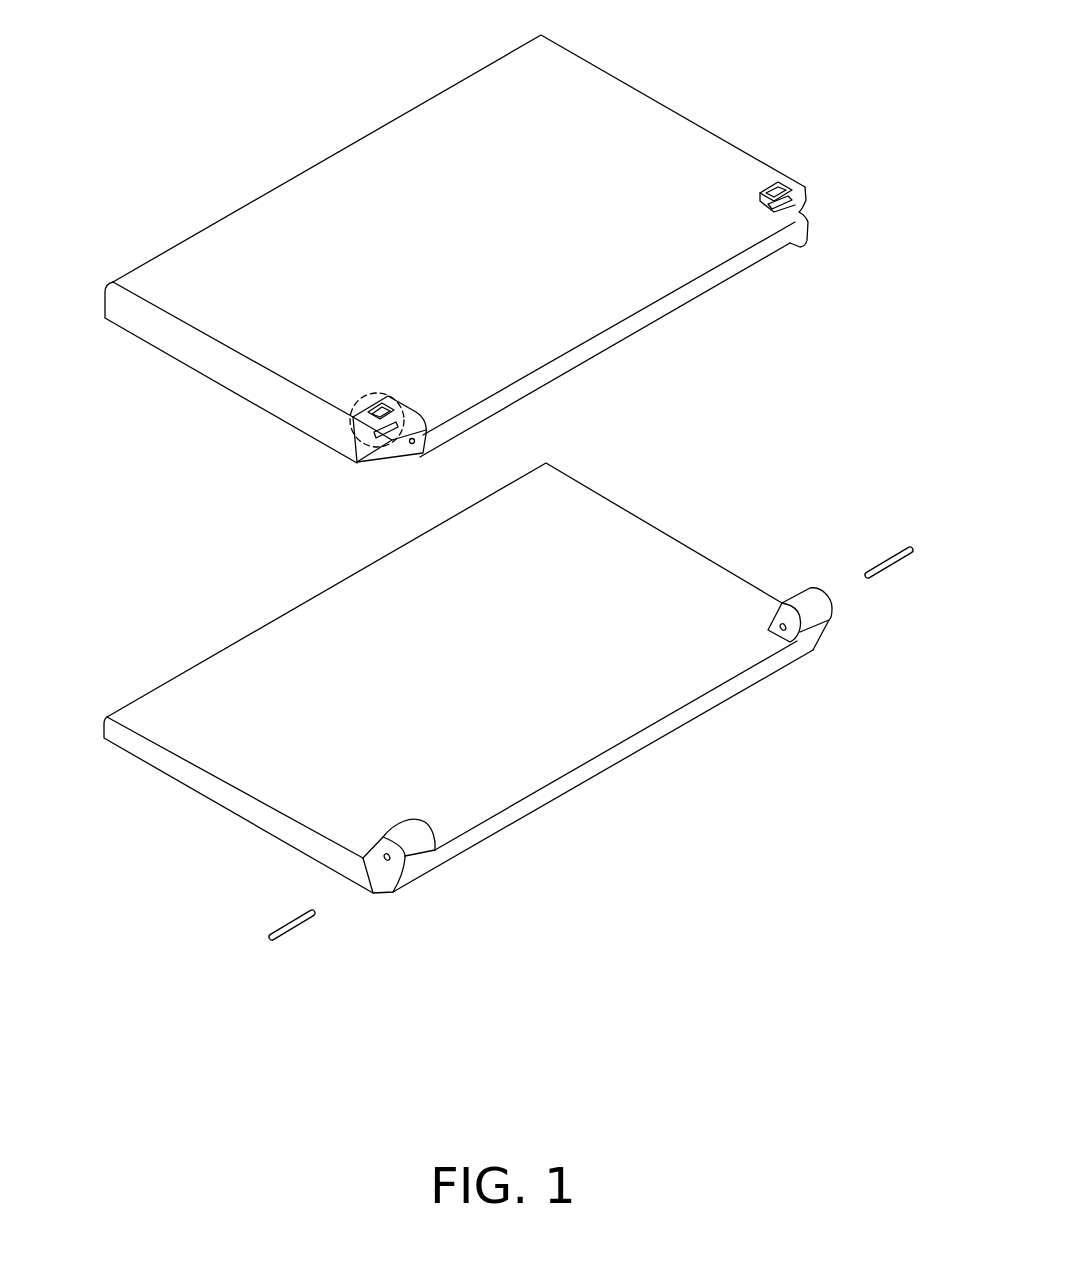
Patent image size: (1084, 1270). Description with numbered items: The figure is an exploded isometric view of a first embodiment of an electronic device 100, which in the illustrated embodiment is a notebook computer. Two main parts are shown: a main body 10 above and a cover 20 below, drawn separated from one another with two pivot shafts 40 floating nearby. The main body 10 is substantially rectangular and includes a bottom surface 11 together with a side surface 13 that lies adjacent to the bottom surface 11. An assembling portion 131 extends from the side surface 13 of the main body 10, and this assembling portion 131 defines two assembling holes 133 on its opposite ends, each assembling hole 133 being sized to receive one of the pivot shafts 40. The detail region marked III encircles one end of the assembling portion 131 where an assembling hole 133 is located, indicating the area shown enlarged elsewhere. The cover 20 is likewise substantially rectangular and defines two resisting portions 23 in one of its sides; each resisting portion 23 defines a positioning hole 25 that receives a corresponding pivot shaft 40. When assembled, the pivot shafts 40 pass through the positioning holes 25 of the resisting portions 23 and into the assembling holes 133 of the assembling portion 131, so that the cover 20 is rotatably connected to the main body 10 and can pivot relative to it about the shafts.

The electronic device 100 is at (456, 46).
The main body 10 is at (206, 391).
The bottom surface 11 is at (297, 230).
The side surface 13 is at (366, 460).
The assembling portion 131 is at (628, 327).
The assembling hole 133 is at (404, 455).
The detail region III is at (345, 432).
The cover 20 is at (263, 610).
The resisting portion 23 is at (430, 850).
The positioning hole 25 is at (384, 861).
The pivot shaft 40 is at (290, 927).